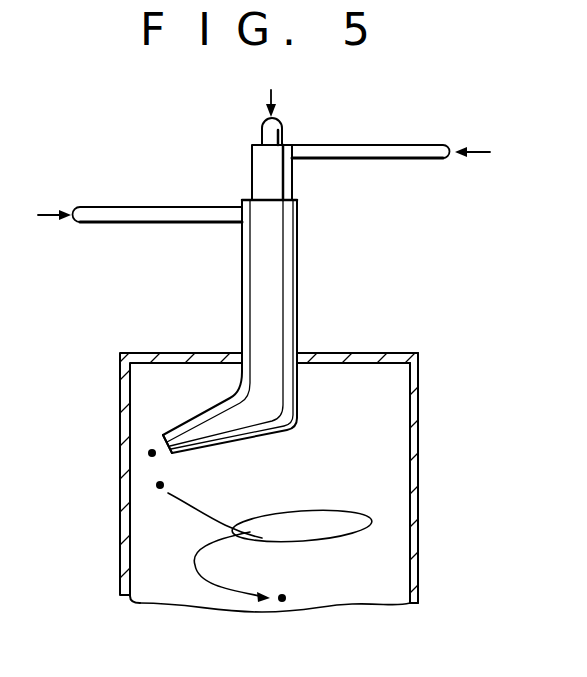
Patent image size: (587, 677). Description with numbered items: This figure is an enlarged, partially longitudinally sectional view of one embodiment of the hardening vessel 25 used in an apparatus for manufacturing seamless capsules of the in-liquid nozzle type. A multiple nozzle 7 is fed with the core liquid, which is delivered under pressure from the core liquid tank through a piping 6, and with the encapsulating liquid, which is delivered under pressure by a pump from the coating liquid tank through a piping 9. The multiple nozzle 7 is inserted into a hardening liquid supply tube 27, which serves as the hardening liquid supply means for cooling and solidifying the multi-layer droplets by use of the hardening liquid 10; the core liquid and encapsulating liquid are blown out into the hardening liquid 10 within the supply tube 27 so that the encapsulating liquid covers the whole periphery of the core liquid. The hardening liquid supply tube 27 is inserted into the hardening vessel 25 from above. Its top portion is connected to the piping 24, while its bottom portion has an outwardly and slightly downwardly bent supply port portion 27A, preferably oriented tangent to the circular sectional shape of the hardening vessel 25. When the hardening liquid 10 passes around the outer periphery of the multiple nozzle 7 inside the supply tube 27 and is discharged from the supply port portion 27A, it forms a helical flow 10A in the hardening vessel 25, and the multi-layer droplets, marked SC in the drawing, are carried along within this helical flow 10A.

The piping 6 is at (284, 127).
The multiple nozzle 7 is at (253, 166).
The piping 9 is at (428, 160).
The hardening liquid 10 is at (390, 415).
The helical flow 10A is at (373, 523).
The piping 24 is at (113, 207).
The hardening vessel 25 is at (418, 565).
The hardening liquid supply tube 27 is at (293, 272).
The supply port portion 27A is at (173, 437).
The specimen chips SC is at (156, 484).